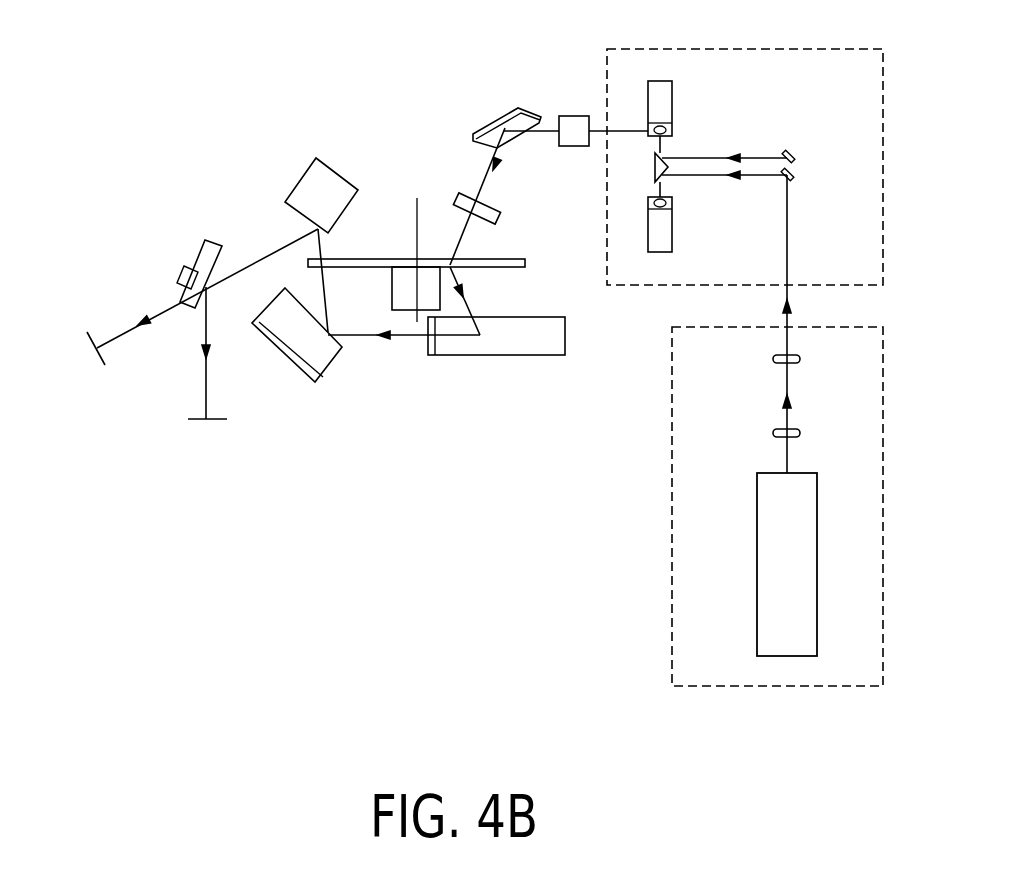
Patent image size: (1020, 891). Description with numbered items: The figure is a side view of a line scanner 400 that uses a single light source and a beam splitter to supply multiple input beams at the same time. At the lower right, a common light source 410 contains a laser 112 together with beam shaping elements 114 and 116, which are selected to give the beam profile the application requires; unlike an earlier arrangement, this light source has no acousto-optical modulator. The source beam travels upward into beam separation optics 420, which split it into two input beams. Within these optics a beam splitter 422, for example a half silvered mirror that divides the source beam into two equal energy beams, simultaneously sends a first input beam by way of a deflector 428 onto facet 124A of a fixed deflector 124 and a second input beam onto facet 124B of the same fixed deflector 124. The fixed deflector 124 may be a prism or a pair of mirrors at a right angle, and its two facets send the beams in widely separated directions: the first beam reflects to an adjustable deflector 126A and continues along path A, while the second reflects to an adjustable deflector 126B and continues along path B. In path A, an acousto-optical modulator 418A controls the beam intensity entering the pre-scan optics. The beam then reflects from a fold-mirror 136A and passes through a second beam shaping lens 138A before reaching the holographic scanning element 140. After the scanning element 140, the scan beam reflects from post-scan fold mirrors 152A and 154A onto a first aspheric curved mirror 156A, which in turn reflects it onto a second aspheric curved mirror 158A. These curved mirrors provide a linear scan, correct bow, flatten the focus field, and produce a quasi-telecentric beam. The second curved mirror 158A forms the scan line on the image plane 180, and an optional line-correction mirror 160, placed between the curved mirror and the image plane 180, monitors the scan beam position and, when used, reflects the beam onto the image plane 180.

The laser 112 is at (757, 580).
The beam shaping element 114 is at (800, 433).
The beam shaping element 116 is at (800, 359).
The fixed deflector 124 is at (655, 165).
The facet 124A is at (668, 160).
The facet 124B is at (667, 175).
The adjustable deflector 126A is at (672, 97).
The adjustable deflector 126B is at (672, 240).
The fold-mirror 136A is at (492, 122).
The second beam shaping lens 138A is at (470, 197).
The scanning element 140 is at (510, 259).
The fold mirror 152A is at (512, 356).
The fold mirror 154A is at (428, 346).
The first aspheric curved mirror 156A is at (302, 388).
The second aspheric curved mirror 158A is at (340, 170).
The line-correction mirror 160 is at (193, 253).
The image plane 180 is at (87, 338).
The line scanner 400 is at (402, 613).
The common light source 410 is at (672, 537).
The acousto-optical modulator 418A is at (575, 116).
The beam separation optics 420 is at (667, 48).
The beam splitter 422 is at (790, 180).
The deflector 428 is at (792, 153).